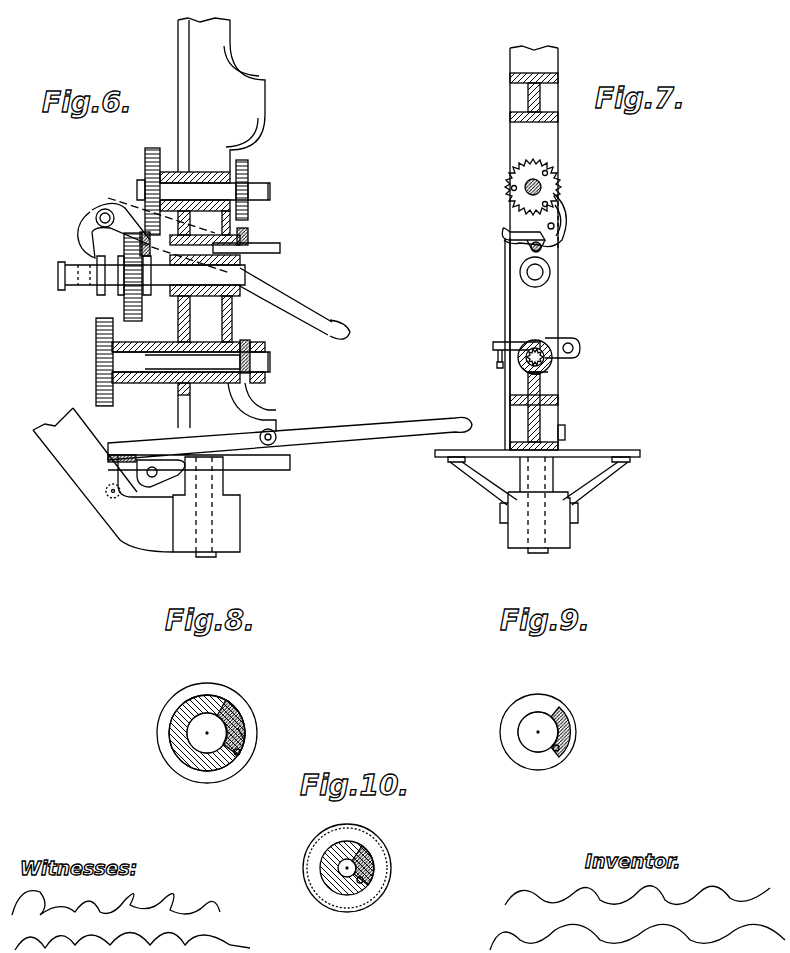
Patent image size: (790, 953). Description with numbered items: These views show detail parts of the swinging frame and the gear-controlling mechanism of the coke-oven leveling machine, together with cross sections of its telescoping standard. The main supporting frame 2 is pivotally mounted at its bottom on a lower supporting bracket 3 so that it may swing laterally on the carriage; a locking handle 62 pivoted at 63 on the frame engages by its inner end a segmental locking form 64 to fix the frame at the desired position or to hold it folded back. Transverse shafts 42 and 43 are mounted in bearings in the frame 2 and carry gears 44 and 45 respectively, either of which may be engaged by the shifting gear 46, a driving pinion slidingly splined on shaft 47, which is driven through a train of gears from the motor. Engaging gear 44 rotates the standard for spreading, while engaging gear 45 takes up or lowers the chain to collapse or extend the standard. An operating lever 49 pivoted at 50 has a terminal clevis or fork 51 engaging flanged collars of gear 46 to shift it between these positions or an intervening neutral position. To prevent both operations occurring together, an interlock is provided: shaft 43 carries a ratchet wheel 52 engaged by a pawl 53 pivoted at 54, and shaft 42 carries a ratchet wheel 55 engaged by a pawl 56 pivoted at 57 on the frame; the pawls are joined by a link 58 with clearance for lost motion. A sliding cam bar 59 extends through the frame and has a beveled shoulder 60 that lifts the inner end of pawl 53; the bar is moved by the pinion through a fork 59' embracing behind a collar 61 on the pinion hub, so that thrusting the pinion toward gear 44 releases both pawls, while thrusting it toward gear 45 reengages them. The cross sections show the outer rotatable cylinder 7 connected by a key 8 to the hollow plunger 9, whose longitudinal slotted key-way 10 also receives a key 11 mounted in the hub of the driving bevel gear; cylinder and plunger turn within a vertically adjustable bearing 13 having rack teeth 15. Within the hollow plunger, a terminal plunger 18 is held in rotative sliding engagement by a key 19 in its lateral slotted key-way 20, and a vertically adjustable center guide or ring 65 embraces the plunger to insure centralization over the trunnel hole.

In FIG. 6, the main supporting frame 2 is at (188, 223).
In FIG. 7, the main supporting frame 2 is at (518, 140).
In FIG. 6, the lower supporting bracket 3 is at (206, 507).
In FIG. 8, the outer supporting hollow rotatable cylinder 7 is at (176, 700).
In FIG. 8, the key 8 is at (250, 722).
In FIG. 8, the hollow plunger 9 is at (176, 746).
In FIG. 9, the hollow plunger 9 is at (522, 706).
In FIG. 10, the hollow plunger 9 is at (318, 868).
In FIG. 8, the longitudinal slotted key-way 10 is at (231, 758).
In FIG. 9, the longitudinal slotted key-way 10 is at (557, 760).
In FIG. 9, the key 11 is at (576, 736).
In FIG. 8, the vertically adjustable bearing 13 is at (228, 694).
In FIG. 8, the rack teeth 15 is at (258, 732).
In FIG. 10, the terminal plunger 18 is at (330, 844).
In FIG. 10, the key 19 is at (368, 862).
In FIG. 10, the lateral longitudinal slotted key-way 20 is at (364, 890).
In FIG. 6, the shaft 42 is at (272, 362).
In FIG. 7, the shaft 42 is at (553, 362).
In FIG. 6, the shaft 43 is at (272, 191).
In FIG. 7, the shaft 43 is at (512, 178).
In FIG. 6, the gear 44 is at (94, 337).
In FIG. 6, the gear 45 is at (152, 148).
In FIG. 6, the shifting gear 46 is at (141, 310).
In FIG. 6, the shaft 47 is at (151, 275).
In FIG. 7, the shaft 47 is at (540, 273).
In FIG. 6, the operating lever 49 is at (312, 312).
In FIG. 6, the pivot 50 is at (101, 211).
In FIG. 6, the terminal clevis or fork 51 is at (90, 245).
In FIG. 6, the ratchet wheel 52 is at (246, 166).
In FIG. 7, the ratchet wheel 52 is at (560, 180).
In FIG. 7, the pawl 53 is at (566, 220).
In FIG. 7, the pivot 54 is at (555, 228).
In FIG. 6, the ratchet wheel 55 is at (250, 380).
In FIG. 7, the ratchet wheel 55 is at (545, 372).
In FIG. 6, the pawl 56 is at (246, 342).
In FIG. 7, the pawl 56 is at (522, 342).
In FIG. 7, the pivot 57 is at (578, 340).
In FIG. 7, the link 58 is at (503, 283).
In FIG. 6, the sliding cam bar 59 is at (268, 248).
In FIG. 7, the sliding cam bar 59 is at (561, 250).
In FIG. 6, the fork 59' is at (166, 217).
In FIG. 6, the beveled shoulder 60 is at (252, 237).
In FIG. 6, the collar 61 is at (150, 285).
In FIG. 6, the locking handle 62 is at (350, 425).
In FIG. 6, the pivot 63 is at (268, 446).
In FIG. 6, the segmental locking form 64 is at (110, 480).
In FIG. 7, the segmental locking form 64 is at (592, 450).
In FIG. 10, the center guide or ring 65 is at (392, 868).